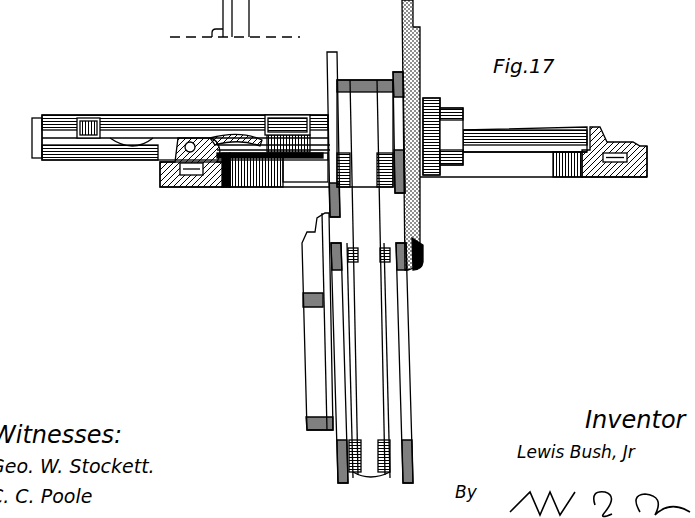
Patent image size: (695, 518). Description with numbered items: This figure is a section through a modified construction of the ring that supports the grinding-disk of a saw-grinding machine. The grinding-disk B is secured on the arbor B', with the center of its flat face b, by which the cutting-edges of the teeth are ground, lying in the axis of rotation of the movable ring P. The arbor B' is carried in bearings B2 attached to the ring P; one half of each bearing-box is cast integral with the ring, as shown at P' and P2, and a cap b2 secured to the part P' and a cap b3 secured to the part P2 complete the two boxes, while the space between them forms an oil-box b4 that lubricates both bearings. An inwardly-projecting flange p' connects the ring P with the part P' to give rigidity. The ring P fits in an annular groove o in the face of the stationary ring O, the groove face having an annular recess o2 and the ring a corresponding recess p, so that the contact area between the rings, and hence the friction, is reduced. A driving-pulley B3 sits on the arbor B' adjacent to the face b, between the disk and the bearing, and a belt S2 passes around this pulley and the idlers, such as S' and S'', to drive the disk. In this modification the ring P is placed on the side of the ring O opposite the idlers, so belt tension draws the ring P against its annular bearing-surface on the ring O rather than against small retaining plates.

The grinding-disk B is at (224, 135).
The arbor B' is at (453, 136).
The bearings B2 is at (76, 118).
The driving-pulley B3 is at (366, 277).
The face of grinding-disk b is at (409, 220).
The cap b2 is at (253, 113).
The cap b3 is at (131, 118).
The oil-box b4 is at (186, 121).
The movable ring P is at (380, 154).
The inwardly-projecting part of bearing-box P' is at (273, 166).
The part of bearing-box P2 is at (58, 160).
The recess p is at (614, 144).
The inwardly-projecting flange p' is at (280, 196).
The annular groove o is at (173, 188).
The annular recess o2 is at (196, 188).
The stationary ring O is at (513, 177).
The idler S' is at (379, 363).
The spoke flange S'' is at (366, 348).
The belt S2 is at (345, 292).